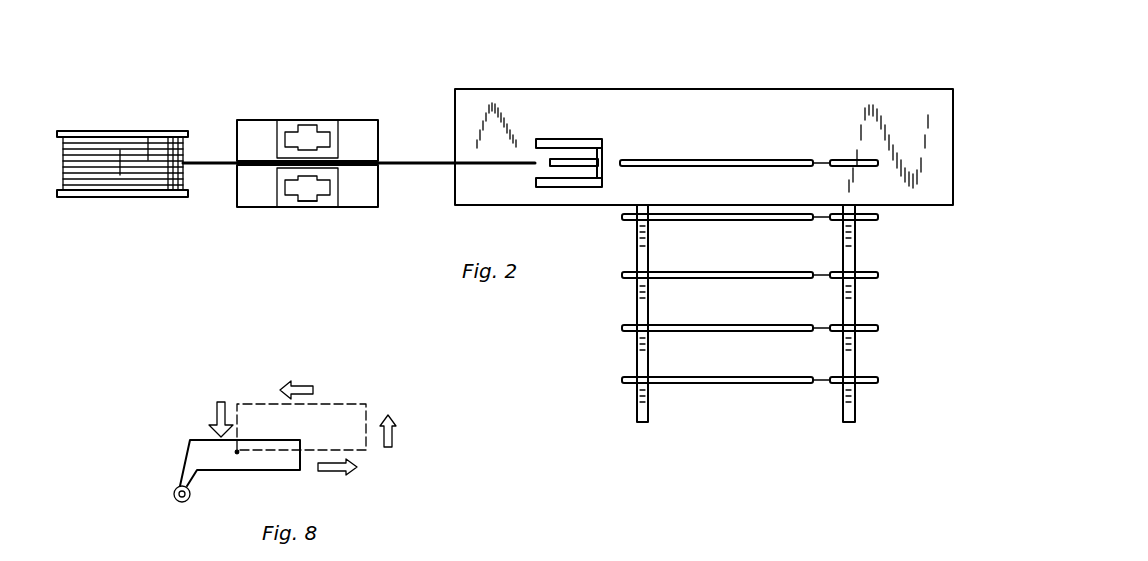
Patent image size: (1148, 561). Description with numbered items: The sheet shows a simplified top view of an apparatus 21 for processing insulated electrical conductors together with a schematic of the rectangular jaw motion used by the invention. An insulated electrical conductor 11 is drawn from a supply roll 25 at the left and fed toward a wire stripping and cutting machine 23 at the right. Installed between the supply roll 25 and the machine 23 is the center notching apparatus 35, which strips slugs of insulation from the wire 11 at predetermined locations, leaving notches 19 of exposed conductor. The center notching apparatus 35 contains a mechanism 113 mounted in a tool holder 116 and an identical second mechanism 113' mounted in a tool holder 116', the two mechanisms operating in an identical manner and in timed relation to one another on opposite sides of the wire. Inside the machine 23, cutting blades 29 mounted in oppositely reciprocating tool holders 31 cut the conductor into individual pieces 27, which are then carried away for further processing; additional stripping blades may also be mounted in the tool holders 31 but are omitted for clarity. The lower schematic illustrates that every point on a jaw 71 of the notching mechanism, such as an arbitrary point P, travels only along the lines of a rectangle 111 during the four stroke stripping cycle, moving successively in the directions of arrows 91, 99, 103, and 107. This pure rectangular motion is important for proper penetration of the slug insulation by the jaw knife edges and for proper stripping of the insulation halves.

In FIG. 2, the insulated electrical conductor 11 is at (201, 158).
In FIG. 8, the insulated electrical conductor 11 is at (168, 500).
In FIG. 2, the supply roll 25 is at (141, 147).
In FIG. 2, the mechanism 113 is at (307, 110).
In FIG. 2, the tool holder 116 is at (336, 117).
In FIG. 2, the second mechanism 113' is at (312, 205).
In FIG. 2, the tool holder 116' is at (264, 211).
In FIG. 2, the center notching apparatus 35 is at (306, 208).
In FIG. 2, the apparatus for processing insulated electrical conductors 21 is at (460, 80).
In FIG. 2, the wire stripping and cutting machine 23 is at (823, 78).
In FIG. 2, the tool holders 31 is at (565, 139).
In FIG. 2, the cutting blades 29 is at (603, 151).
In FIG. 2, the notches 19 is at (541, 167).
In FIG. 2, the individual pieces 27 is at (745, 160).
In FIG. 8, the jaw 71 is at (288, 460).
In FIG. 8, the rectangle 111 is at (353, 405).
In FIG. 8, the arrow 99 is at (214, 410).
In FIG. 8, the arrow 91 is at (306, 387).
In FIG. 8, the arrow 107 is at (396, 437).
In FIG. 8, the arrow 103 is at (331, 470).